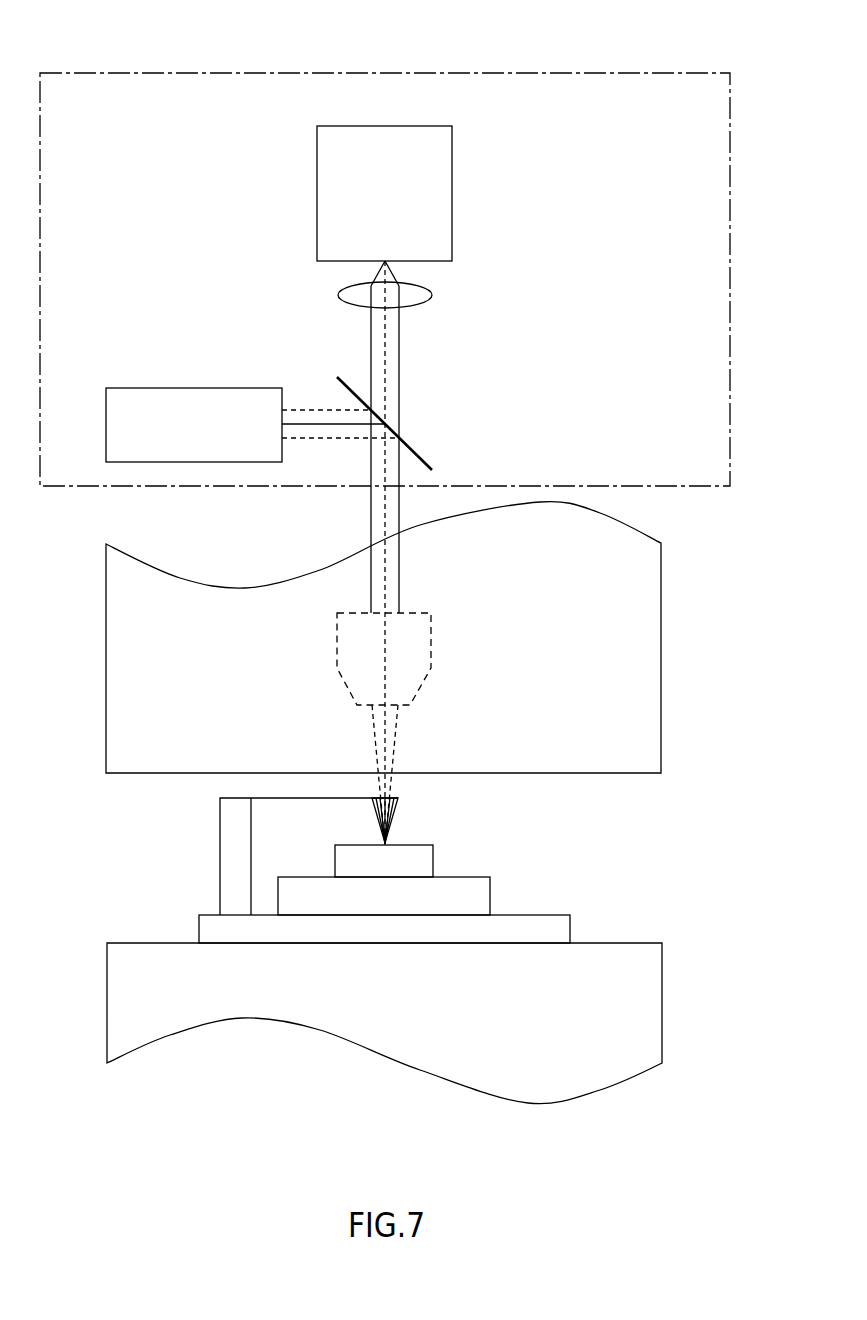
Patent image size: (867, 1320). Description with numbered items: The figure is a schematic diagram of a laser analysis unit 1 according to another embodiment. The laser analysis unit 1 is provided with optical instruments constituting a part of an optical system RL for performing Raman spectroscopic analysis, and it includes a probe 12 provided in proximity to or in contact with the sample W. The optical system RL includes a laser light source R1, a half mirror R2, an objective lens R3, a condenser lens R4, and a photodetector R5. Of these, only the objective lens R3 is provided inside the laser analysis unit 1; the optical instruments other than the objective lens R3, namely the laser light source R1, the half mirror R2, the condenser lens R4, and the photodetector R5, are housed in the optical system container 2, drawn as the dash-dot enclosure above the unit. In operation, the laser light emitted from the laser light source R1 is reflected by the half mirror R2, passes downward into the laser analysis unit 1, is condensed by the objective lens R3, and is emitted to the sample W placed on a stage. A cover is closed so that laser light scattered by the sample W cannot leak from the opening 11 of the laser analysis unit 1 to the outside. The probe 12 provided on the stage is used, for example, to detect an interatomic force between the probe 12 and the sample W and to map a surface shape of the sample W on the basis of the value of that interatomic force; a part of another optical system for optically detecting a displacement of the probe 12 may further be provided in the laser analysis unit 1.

The laser analysis unit 1 is at (95, 588).
The optical system container 2 is at (610, 73).
The opening 11 is at (126, 863).
The probe 12 is at (375, 812).
The sample W is at (430, 845).
The optical system RL is at (215, 170).
The laser light source R1 is at (181, 388).
The half mirror R2 is at (418, 452).
The objective lens R3 is at (432, 652).
The condenser lens R4 is at (432, 295).
The photodetector R5 is at (452, 194).